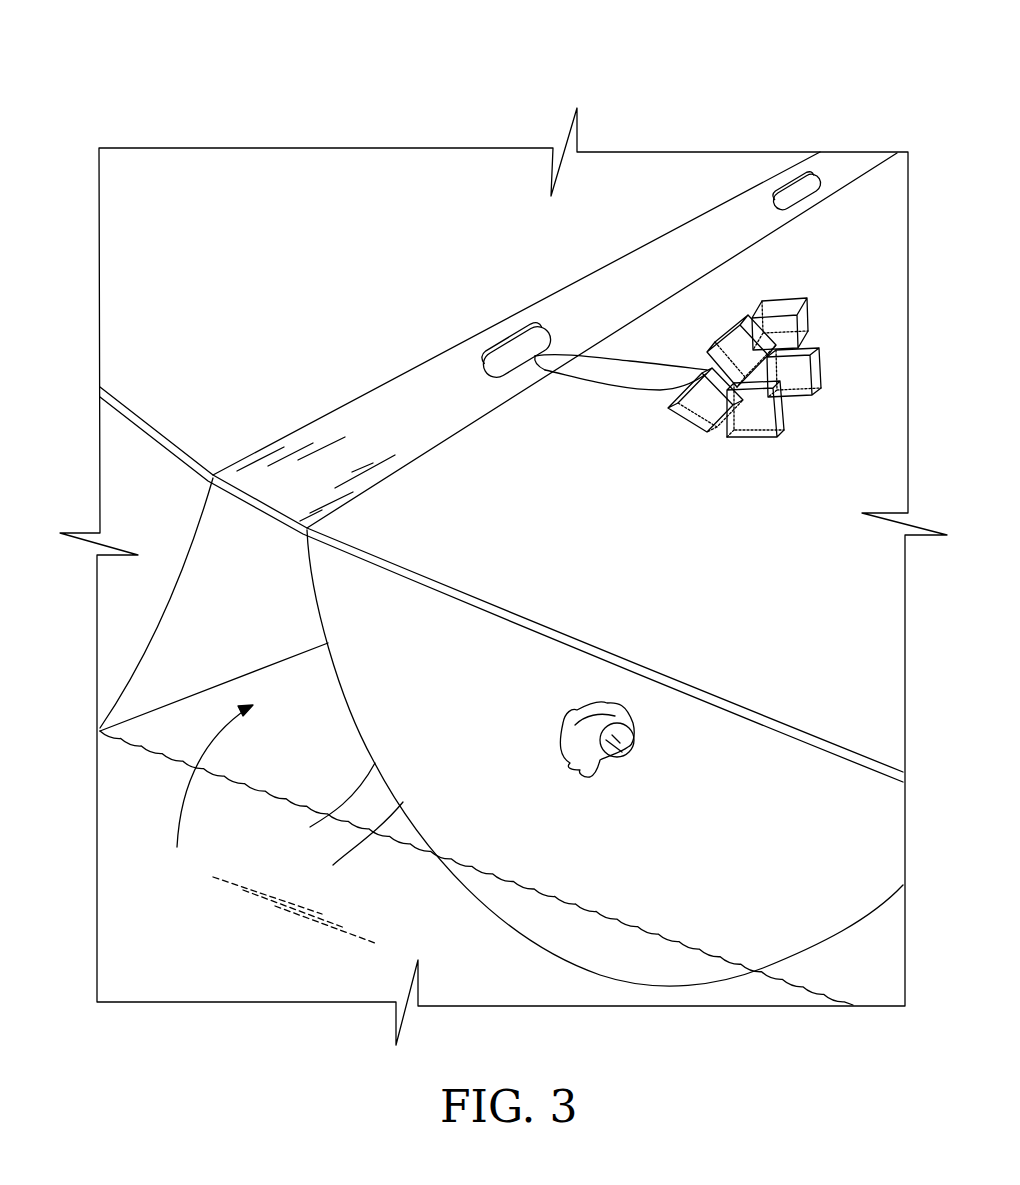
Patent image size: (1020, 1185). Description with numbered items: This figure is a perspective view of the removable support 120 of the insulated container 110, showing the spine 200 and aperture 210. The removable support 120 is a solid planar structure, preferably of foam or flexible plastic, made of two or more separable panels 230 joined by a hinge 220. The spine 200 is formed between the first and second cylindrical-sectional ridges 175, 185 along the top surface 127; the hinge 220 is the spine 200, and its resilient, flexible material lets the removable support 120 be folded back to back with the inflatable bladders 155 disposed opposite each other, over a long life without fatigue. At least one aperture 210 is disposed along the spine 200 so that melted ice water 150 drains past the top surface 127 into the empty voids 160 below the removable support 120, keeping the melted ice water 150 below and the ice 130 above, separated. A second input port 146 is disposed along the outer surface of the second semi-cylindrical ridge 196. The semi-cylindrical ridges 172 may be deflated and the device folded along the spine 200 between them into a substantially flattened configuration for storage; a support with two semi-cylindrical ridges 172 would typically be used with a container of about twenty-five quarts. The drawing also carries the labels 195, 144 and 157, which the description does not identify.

The removable support 120 is at (562, 53).
The aperture 210 is at (507, 333).
The separable panel 230 is at (280, 252).
The spine 200 is at (425, 408).
The top surface 127 is at (118, 395).
The hinge 220 is at (350, 436).
The melted ice water 150 is at (630, 360).
The ice 130 is at (677, 403).
The upper region 195 is at (171, 517).
The first cylindrical-sectional ridge 175 is at (156, 602).
The second cylindrical-sectional ridge 185 is at (491, 779).
The second input port 146 is at (637, 730).
The container 144 is at (617, 750).
The second semi-cylindrical ridge 196 is at (612, 862).
The inflatable bladder 155 is at (322, 804).
The guide line 157 is at (348, 842).
The void 160 is at (206, 789).
The insulated container 110 is at (330, 921).
The semi-cylindrical ridge 172 is at (513, 933).